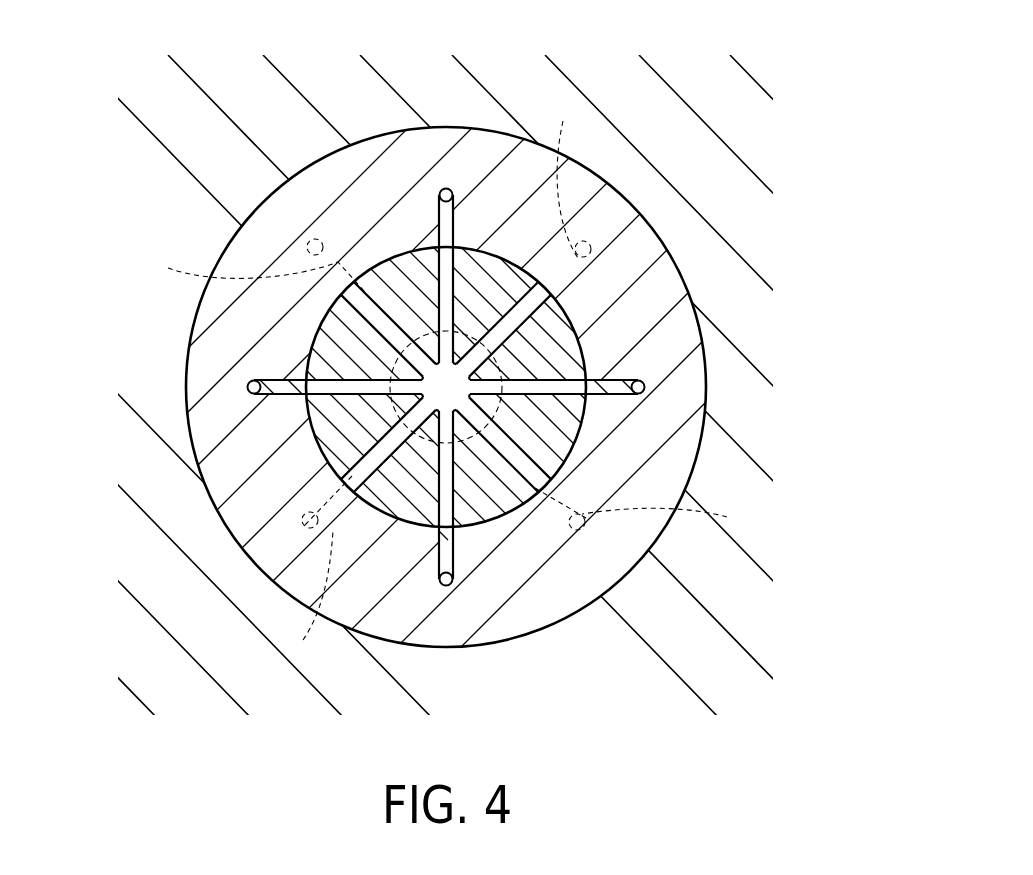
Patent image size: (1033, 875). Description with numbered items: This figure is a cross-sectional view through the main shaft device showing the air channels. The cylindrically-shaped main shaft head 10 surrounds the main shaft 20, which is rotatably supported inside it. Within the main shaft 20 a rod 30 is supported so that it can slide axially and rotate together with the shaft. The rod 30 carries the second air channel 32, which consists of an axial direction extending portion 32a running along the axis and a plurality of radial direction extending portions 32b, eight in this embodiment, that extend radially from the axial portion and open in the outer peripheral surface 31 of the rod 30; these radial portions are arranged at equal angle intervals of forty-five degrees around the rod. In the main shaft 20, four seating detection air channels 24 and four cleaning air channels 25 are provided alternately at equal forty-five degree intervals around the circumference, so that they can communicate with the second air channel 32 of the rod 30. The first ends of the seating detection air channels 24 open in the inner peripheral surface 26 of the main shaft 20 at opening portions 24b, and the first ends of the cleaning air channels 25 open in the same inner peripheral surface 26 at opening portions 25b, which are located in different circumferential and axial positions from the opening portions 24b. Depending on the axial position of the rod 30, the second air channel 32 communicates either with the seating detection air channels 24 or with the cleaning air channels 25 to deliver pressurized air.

The main shaft head 10 is at (676, 125).
The main shaft 20 is at (666, 224).
The seating detection air channel 24 is at (423, 384).
The opening portion 24b is at (450, 188).
The cleaning air channel 25 is at (443, 380).
The opening portion 25b is at (355, 278).
The inner peripheral surface 26 is at (612, 298).
The rod 30 is at (451, 390).
The outer peripheral surface 31 is at (586, 437).
The second air channel 32 is at (416, 350).
The axial direction extending portion 32a is at (428, 372).
The radial direction extending portion 32b is at (432, 246).